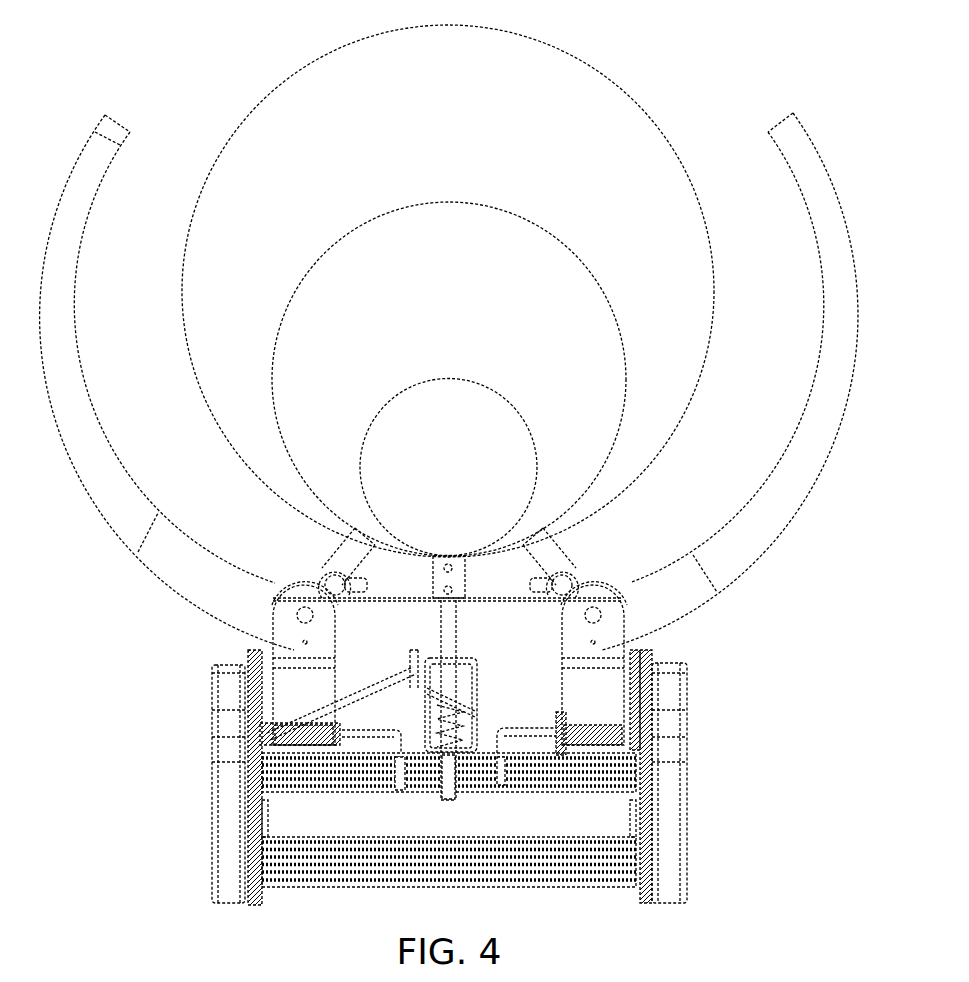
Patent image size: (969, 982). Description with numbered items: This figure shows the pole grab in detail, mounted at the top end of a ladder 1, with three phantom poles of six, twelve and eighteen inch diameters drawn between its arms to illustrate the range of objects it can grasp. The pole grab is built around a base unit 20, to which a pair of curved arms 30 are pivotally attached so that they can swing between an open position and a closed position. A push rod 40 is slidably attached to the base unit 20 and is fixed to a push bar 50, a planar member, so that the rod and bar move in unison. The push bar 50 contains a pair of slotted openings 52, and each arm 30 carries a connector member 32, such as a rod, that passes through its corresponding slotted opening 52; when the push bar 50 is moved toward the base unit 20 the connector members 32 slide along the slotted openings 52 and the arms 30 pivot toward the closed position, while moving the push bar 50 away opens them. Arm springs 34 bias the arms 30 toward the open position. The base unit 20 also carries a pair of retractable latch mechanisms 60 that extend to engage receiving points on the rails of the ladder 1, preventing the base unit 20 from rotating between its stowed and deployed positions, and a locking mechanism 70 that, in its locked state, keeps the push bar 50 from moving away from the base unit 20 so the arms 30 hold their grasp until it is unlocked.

The ladder 1 is at (471, 764).
The base unit 20 is at (246, 659).
The arms 30 is at (100, 400).
The connector member 32 is at (298, 586).
The arm springs 34 is at (275, 580).
The push rod 40 is at (463, 640).
The push bar 50 is at (553, 550).
The slotted openings 52 is at (356, 577).
The latch mechanisms 60 is at (375, 718).
The locking mechanism 70 is at (483, 696).